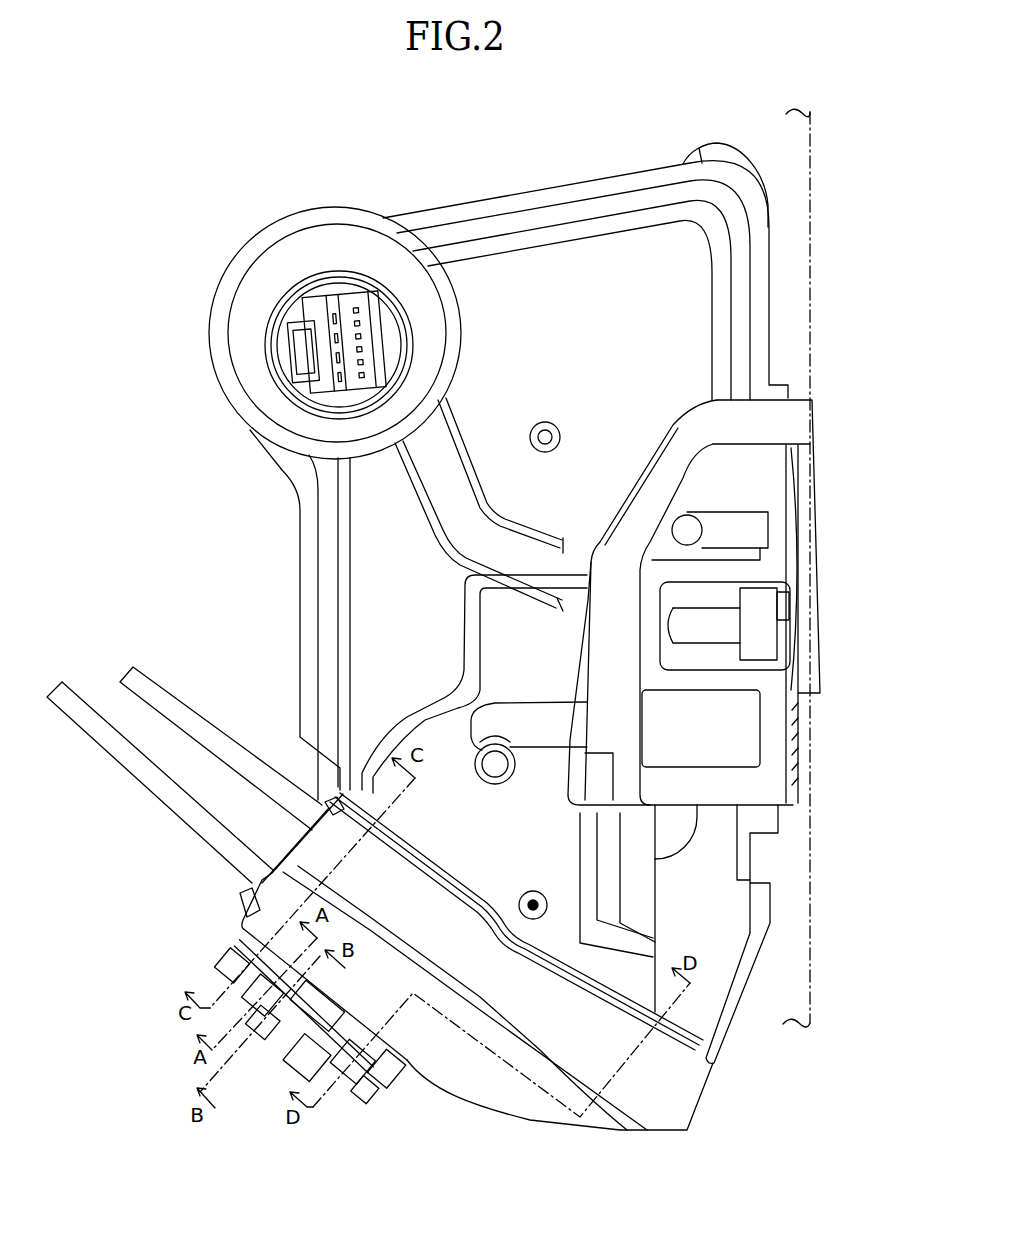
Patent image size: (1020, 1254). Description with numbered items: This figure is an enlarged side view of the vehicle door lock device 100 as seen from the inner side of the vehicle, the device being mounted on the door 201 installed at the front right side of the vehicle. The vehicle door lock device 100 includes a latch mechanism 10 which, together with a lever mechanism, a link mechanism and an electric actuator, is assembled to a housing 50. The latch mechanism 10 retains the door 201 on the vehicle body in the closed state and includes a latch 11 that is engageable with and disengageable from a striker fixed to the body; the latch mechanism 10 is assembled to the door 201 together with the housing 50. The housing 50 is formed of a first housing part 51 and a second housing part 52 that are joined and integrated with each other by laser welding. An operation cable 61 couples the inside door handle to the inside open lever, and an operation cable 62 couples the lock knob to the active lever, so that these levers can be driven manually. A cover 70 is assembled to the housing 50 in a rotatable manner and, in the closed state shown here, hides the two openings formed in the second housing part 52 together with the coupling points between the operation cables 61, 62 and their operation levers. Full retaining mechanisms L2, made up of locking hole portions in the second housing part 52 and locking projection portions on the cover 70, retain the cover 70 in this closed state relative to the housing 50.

The latch mechanism 10 is at (817, 442).
The latch 11 is at (763, 632).
The housing 50 is at (771, 308).
The first housing part 51 is at (771, 255).
The second housing part 52 is at (745, 902).
The operation cable 61 is at (157, 693).
The operation cable 62 is at (205, 823).
The cover 70 is at (690, 1103).
The vehicle door lock device 100 is at (300, 580).
The door 201 is at (800, 163).
The full retaining mechanism L2 is at (388, 811).